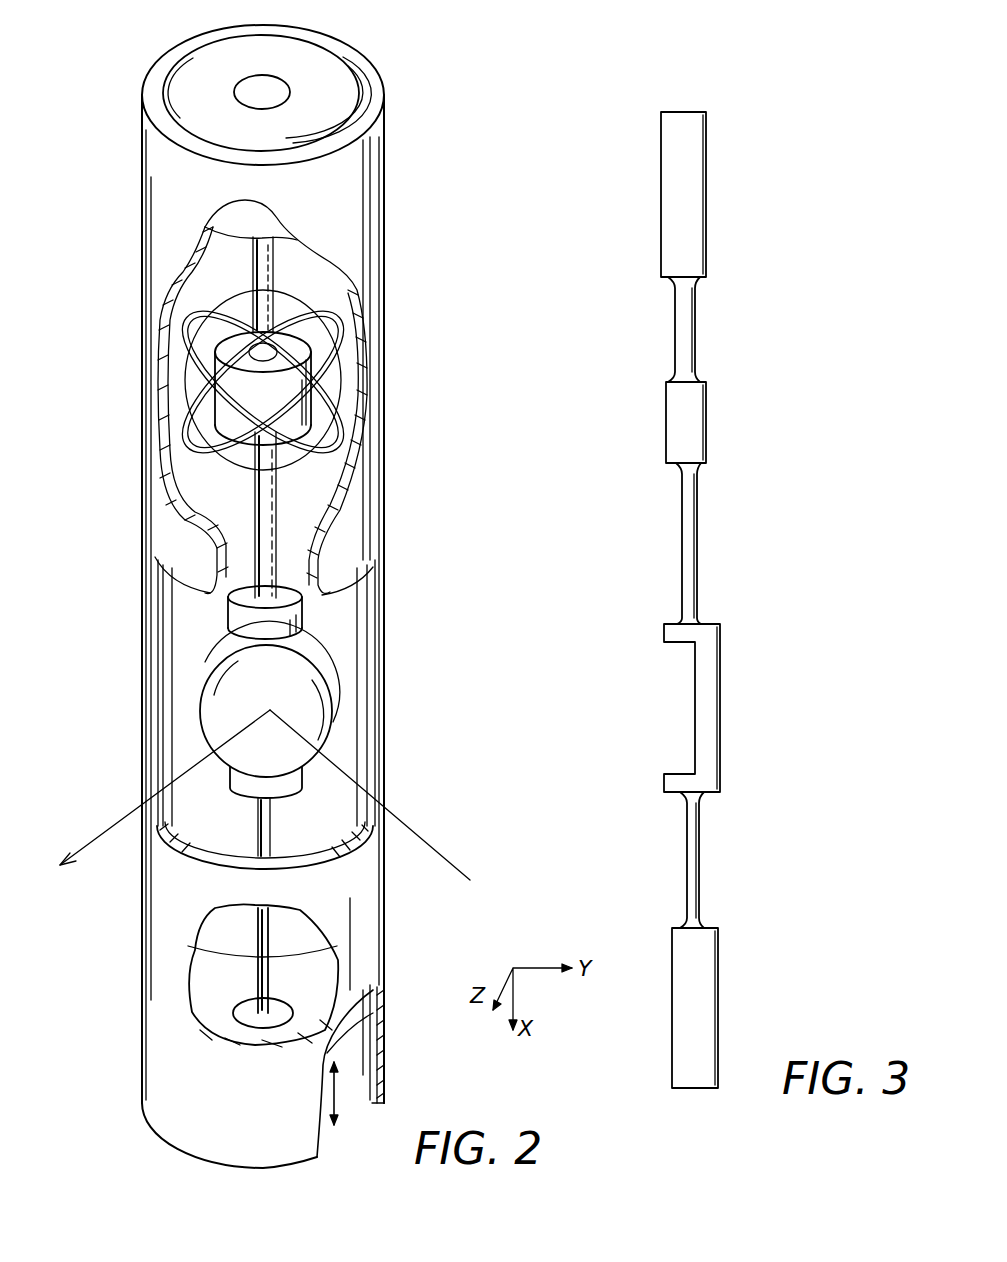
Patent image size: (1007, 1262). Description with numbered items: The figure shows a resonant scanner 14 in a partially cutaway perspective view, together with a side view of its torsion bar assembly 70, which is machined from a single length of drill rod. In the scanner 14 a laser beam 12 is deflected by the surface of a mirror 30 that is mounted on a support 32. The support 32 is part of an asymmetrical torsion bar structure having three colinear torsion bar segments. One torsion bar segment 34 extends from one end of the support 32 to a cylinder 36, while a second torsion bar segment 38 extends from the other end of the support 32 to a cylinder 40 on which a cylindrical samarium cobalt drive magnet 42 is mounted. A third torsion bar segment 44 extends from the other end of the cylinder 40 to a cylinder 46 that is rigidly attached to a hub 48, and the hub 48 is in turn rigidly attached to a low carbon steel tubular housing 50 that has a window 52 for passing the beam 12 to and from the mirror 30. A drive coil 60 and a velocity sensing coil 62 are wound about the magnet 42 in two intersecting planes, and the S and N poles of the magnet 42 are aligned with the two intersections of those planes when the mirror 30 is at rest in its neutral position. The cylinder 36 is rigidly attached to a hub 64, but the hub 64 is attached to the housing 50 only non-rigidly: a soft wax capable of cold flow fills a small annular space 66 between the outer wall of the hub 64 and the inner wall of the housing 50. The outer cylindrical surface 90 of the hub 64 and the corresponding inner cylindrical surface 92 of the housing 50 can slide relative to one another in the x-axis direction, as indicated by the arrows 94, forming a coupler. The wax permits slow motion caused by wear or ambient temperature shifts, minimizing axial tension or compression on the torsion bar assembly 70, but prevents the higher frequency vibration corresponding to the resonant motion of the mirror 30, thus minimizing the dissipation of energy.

In FIG. 2, the laser beam 12 is at (458, 862).
In FIG. 2, the scanner 14 is at (120, 1115).
In FIG. 2, the mirror 30 is at (218, 717).
In FIG. 2, the support 32 is at (303, 631).
In FIG. 3, the support 32 is at (721, 692).
In FIG. 2, the torsion bar segment 34 is at (267, 813).
In FIG. 3, the torsion bar segment 34 is at (700, 867).
In FIG. 2, the cylinder 36 is at (277, 1010).
In FIG. 3, the cylinder 36 is at (719, 980).
In FIG. 2, the second torsion bar segment 38 is at (267, 543).
In FIG. 3, the second torsion bar segment 38 is at (697, 545).
In FIG. 2, the cylinder 40 is at (278, 365).
In FIG. 3, the cylinder 40 is at (706, 419).
In FIG. 2, the drive magnet 42 is at (230, 393).
In FIG. 2, the third torsion bar segment 44 is at (267, 258).
In FIG. 3, the third torsion bar segment 44 is at (694, 327).
In FIG. 2, the cylinder 46 is at (258, 90).
In FIG. 3, the cylinder 46 is at (707, 170).
In FIG. 2, the hub 48 is at (333, 82).
In FIG. 2, the tubular housing 50 is at (162, 173).
In FIG. 2, the window 52 is at (207, 860).
In FIG. 2, the drive coil 60 is at (343, 302).
In FIG. 2, the velocity sensing coil 62 is at (343, 480).
In FIG. 2, the hub 64 is at (303, 1007).
In FIG. 2, the annular space 66 is at (387, 1027).
In FIG. 3, the torsion bar assembly 70 is at (649, 88).
In FIG. 2, the outer cylindrical surface 90 is at (373, 1111).
In FIG. 2, the inner cylindrical surface 92 is at (383, 1077).
In FIG. 2, the arrows 94 is at (330, 1094).